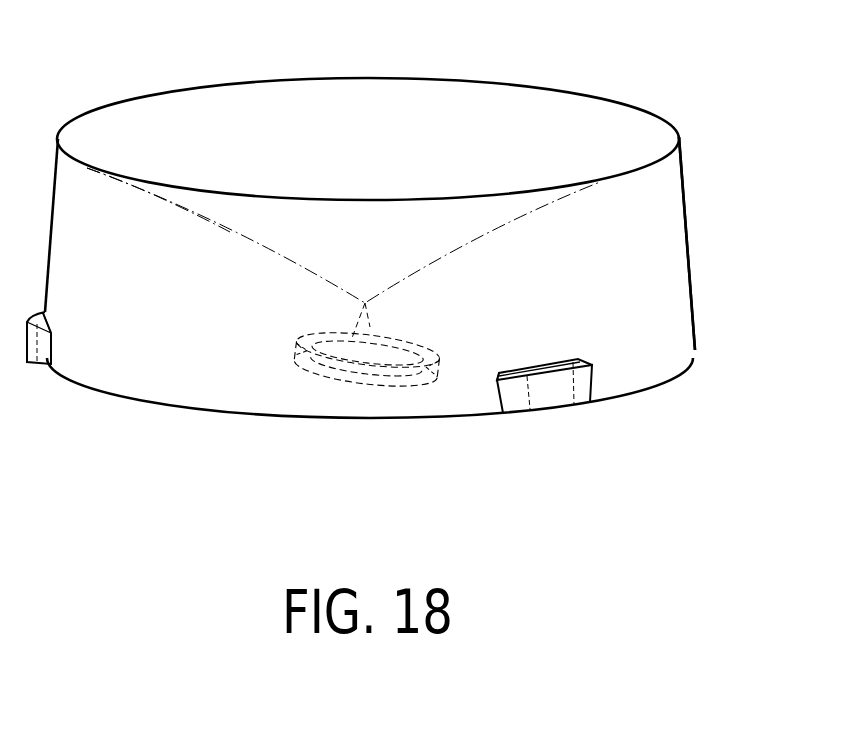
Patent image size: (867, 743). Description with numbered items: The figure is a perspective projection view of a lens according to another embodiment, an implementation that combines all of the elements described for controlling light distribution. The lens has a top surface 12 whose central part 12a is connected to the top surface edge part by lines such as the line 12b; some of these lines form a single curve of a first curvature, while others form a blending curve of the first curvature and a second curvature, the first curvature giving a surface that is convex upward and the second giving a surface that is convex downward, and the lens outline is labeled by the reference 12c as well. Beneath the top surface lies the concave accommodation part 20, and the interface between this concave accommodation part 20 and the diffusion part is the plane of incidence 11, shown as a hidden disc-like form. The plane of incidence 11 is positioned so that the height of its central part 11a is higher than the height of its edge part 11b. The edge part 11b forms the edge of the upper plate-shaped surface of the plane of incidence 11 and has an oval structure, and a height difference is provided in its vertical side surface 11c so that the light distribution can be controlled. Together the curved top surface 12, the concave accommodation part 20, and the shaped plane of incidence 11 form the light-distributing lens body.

The top surface 12 is at (528, 120).
The top surface central part 12a is at (365, 303).
The line connecting the top surface central part to the top surface edge part 12b is at (662, 163).
The rib portion 12c is at (193, 213).
The plane of incidence 11 is at (409, 403).
The central part 11a is at (350, 338).
The edge part 11b is at (380, 363).
The vertical side surface 11c is at (417, 381).
The concave accommodation part 20 is at (383, 403).